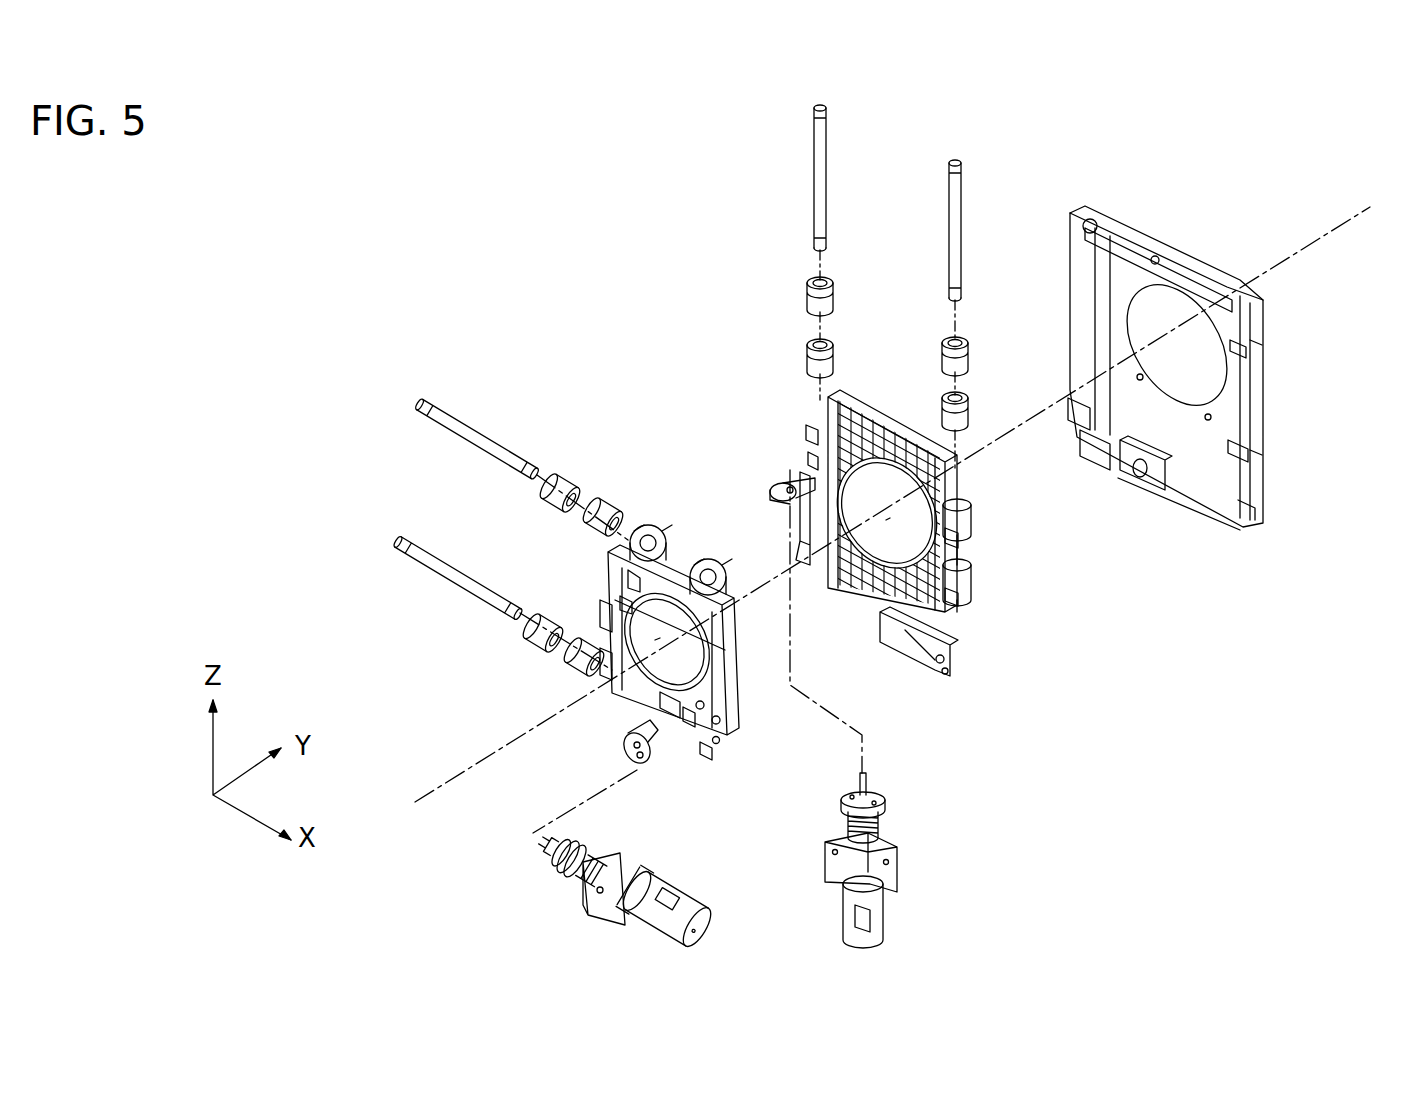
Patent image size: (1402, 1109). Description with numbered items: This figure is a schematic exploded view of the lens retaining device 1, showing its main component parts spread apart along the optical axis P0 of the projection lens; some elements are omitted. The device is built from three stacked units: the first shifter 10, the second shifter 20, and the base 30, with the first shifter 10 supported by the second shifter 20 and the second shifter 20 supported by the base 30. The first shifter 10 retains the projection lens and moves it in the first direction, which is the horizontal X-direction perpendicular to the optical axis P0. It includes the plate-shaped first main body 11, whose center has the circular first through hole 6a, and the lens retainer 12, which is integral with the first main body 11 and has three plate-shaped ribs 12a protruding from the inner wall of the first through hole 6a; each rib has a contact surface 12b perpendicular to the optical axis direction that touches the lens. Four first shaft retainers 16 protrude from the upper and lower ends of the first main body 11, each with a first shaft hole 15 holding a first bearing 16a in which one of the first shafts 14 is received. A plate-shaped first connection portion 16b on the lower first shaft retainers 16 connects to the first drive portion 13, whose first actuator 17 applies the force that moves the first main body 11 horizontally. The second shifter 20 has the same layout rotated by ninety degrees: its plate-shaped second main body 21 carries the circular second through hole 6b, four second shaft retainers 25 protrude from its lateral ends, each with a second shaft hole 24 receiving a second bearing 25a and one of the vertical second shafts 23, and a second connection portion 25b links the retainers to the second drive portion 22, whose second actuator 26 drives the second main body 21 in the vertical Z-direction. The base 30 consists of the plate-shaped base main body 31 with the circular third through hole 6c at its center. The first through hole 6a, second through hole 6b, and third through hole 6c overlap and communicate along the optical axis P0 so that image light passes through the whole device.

The lens retaining device 1 is at (490, 283).
The optical axis P0 is at (433, 787).
The first shifter 10 is at (435, 690).
The first main body 11 is at (727, 722).
The lens retainer 12 is at (612, 615).
The ribs 12a is at (630, 580).
The contact surface 12b is at (625, 600).
The first drive portion 13 is at (560, 912).
The first shafts 14 is at (420, 560).
The first shaft hole 15 is at (712, 760).
The first shaft retainers 16 is at (690, 760).
The first bearing 16a is at (585, 672).
The first connection portion 16b is at (618, 745).
The first actuator 17 is at (702, 925).
The first through hole 6a is at (695, 646).
The second shifter 20 is at (1010, 657).
The second main body 21 is at (885, 425).
The second drive portion 22 is at (920, 858).
The second shafts 23 is at (958, 192).
The second shaft hole 24 is at (975, 565).
The second shaft retainers 25 is at (975, 592).
The second bearing 25a is at (975, 412).
The second connection portion 25b is at (773, 486).
The second actuator 26 is at (874, 905).
The second through hole 6b is at (893, 548).
The base 30 is at (1290, 470).
The base main body 31 is at (1180, 245).
The third through hole 6c is at (1200, 352).